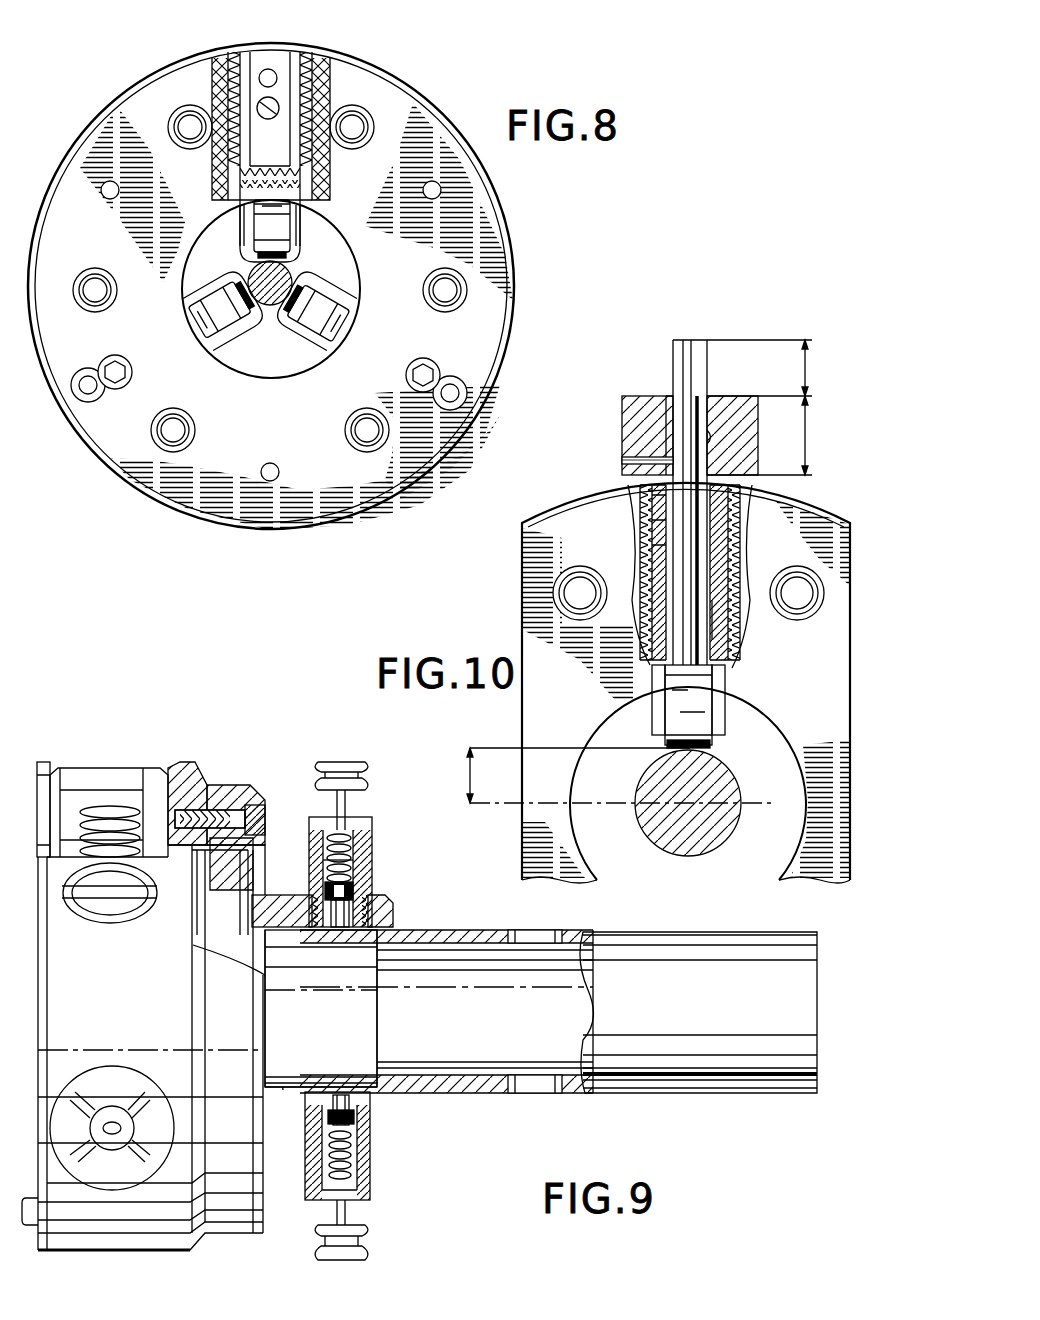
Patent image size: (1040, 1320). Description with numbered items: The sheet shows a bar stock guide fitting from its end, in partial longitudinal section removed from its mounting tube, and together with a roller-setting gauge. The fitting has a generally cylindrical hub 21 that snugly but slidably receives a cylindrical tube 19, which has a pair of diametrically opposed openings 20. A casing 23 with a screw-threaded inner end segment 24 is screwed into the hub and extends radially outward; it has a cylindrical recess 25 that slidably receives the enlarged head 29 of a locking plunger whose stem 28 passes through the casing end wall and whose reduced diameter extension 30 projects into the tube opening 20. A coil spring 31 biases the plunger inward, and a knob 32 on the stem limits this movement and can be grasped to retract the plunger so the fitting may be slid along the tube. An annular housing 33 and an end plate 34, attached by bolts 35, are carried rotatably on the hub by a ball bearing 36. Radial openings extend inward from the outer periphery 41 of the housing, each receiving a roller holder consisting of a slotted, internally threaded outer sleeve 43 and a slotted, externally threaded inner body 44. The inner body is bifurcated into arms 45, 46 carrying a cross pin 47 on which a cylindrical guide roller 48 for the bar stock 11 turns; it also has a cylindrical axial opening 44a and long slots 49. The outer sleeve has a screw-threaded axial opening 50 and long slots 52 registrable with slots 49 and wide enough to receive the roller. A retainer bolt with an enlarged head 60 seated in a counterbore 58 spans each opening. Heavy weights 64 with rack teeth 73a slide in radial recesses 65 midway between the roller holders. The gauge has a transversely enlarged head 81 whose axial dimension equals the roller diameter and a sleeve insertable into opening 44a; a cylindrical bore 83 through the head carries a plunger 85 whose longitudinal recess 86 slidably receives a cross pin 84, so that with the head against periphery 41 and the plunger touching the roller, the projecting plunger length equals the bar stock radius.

In FIG. 8, the bar stock 11 is at (274, 306).
In FIG. 10, the bar stock 11 is at (700, 852).
In FIG. 9, the cylindrical tube 19 is at (450, 930).
In FIG. 9, the openings 20 is at (532, 932).
In FIG. 9, the hub 21 is at (280, 895).
In FIG. 9, the casing 23 is at (372, 830).
In FIG. 9, the screw-threaded inner end segment 24 is at (312, 924).
In FIG. 9, the cylindrical recess 25 is at (358, 862).
In FIG. 9, the stem 28 is at (346, 804).
In FIG. 9, the enlarged head 29 is at (354, 888).
In FIG. 9, the reduced diameter extension 30 is at (340, 924).
In FIG. 9, the coil spring 31 is at (328, 842).
In FIG. 9, the knob 32 is at (348, 762).
In FIG. 8, the annular housing 33 is at (403, 100).
In FIG. 10, the annular housing 33 is at (590, 674).
In FIG. 9, the annular housing 33 is at (196, 778).
In FIG. 9, the end plate 34 is at (238, 786).
In FIG. 9, the bolts 35 is at (258, 818).
In FIG. 9, the ball bearing 36 is at (226, 926).
In FIG. 9, the outer periphery 41 is at (176, 764).
In FIG. 8, the outer sleeve 43 is at (240, 52).
In FIG. 10, the outer sleeve 43 is at (640, 550).
In FIG. 9, the outer sleeve 43 is at (106, 918).
In FIG. 8, the inner body 44 is at (312, 166).
In FIG. 10, the inner body 44 is at (740, 558).
In FIG. 10, the cylindrical axial opening 44a is at (716, 630).
In FIG. 8, the arm 45 is at (240, 226).
In FIG. 10, the arm 45 is at (654, 698).
In FIG. 8, the arm 46 is at (292, 230).
In FIG. 10, the arm 46 is at (726, 722).
In FIG. 8, the cross pin 47 is at (248, 244).
In FIG. 10, the cross pin 47 is at (714, 700).
In FIG. 8, the guide roller 48 is at (286, 257).
In FIG. 10, the guide roller 48 is at (712, 746).
In FIG. 8, the slots 49 is at (240, 165).
In FIG. 8, the screw-threaded axial opening 50 is at (246, 60).
In FIG. 10, the screw-threaded axial opening 50 is at (650, 512).
In FIG. 8, the slots 52 is at (275, 62).
In FIG. 8, the counterbore 58 is at (86, 376).
In FIG. 8, the enlarged head 60 is at (119, 360).
In FIG. 9, the weights 64 is at (118, 770).
In FIG. 9, the radial recesses 65 is at (42, 762).
In FIG. 9, the rack teeth 73a is at (103, 808).
In FIG. 10, the head 81 is at (622, 412).
In FIG. 10, the cylindrical bore 83 is at (707, 437).
In FIG. 10, the cross pin 84 is at (640, 455).
In FIG. 10, the plunger 85 is at (684, 340).
In FIG. 10, the longitudinal recess 86 is at (670, 400).